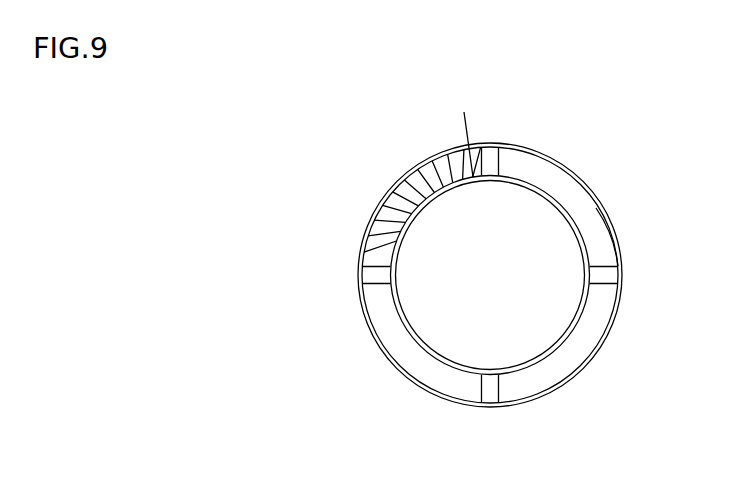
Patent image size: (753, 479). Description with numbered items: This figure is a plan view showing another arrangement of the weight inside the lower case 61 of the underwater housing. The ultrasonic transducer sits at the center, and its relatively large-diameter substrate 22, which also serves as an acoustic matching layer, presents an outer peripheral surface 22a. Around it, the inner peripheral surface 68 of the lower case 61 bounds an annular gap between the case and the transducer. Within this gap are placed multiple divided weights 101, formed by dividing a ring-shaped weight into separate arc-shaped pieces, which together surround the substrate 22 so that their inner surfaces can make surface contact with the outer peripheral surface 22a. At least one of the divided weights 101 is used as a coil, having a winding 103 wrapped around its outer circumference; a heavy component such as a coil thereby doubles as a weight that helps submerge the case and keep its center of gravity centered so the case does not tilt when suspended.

The substrate 22 is at (539, 187).
The outer peripheral surface of the substrate 22a is at (605, 285).
The lower case 61 is at (596, 208).
The inner peripheral surface of the lower case 68 is at (612, 227).
The divided weights 101 is at (522, 162).
The winding 103 is at (362, 252).